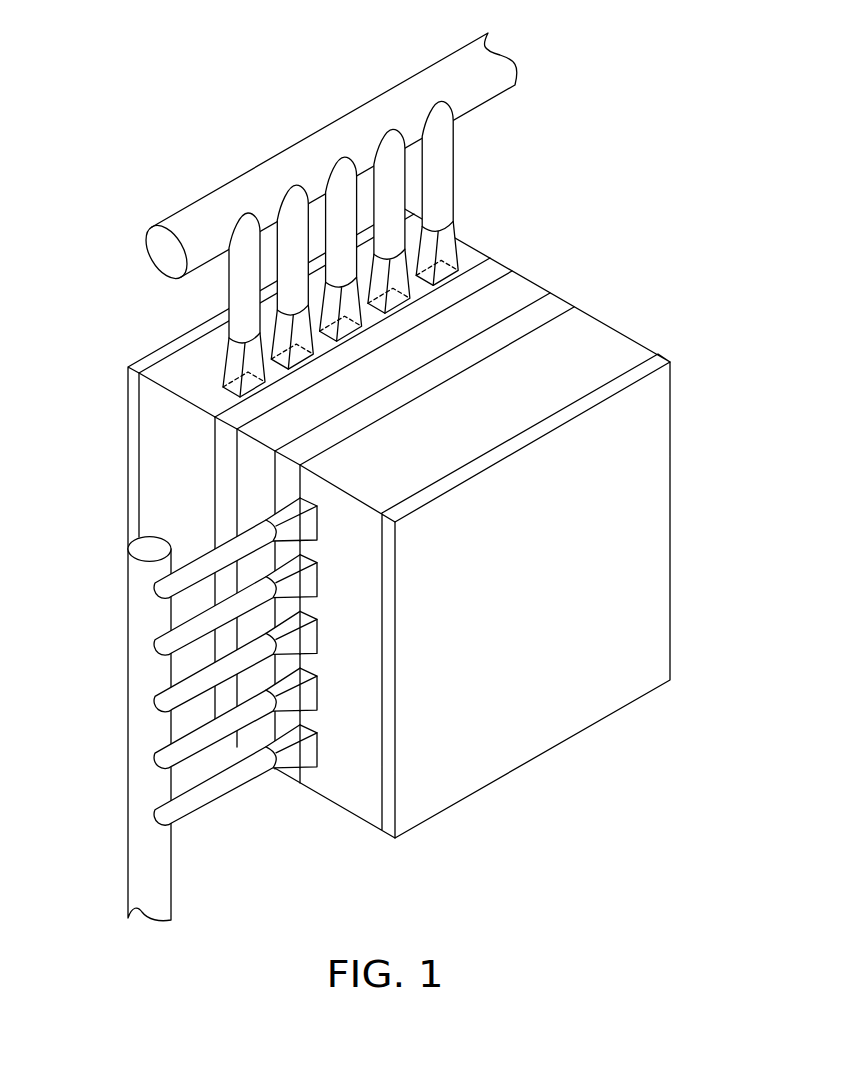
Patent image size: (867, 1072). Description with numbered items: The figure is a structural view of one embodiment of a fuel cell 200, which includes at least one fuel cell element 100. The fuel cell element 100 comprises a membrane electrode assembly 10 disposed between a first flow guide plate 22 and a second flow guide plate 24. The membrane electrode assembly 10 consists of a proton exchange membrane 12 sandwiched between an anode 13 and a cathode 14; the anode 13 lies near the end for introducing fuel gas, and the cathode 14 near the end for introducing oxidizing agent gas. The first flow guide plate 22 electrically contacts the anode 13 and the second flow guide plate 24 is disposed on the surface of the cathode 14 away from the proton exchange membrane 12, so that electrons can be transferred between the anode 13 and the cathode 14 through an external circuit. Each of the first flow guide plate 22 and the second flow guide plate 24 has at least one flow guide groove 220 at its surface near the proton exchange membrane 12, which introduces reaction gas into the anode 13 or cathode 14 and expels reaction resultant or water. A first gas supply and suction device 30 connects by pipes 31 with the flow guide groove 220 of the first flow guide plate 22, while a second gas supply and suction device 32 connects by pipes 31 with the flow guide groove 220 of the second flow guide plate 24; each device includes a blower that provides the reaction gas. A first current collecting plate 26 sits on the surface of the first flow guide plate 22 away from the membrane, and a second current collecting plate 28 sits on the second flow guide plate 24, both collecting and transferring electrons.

The fuel cell element 100 is at (379, 463).
The membrane electrode assembly 10 is at (430, 482).
The proton exchange membrane 12 is at (522, 297).
The anode 13 is at (492, 268).
The cathode 14 is at (442, 524).
The fuel cell 200 is at (317, 42).
The flow guide groove 220 is at (452, 240).
The first flow guide plate 22 is at (329, 438).
The second flow guide plate 24 is at (471, 540).
The first current collecting plate 26 is at (139, 453).
The second current collecting plate 28 is at (492, 733).
The first gas supply and suction device 30 is at (364, 485).
The pipes 31 is at (442, 160).
The second gas supply and suction device 32 is at (148, 871).